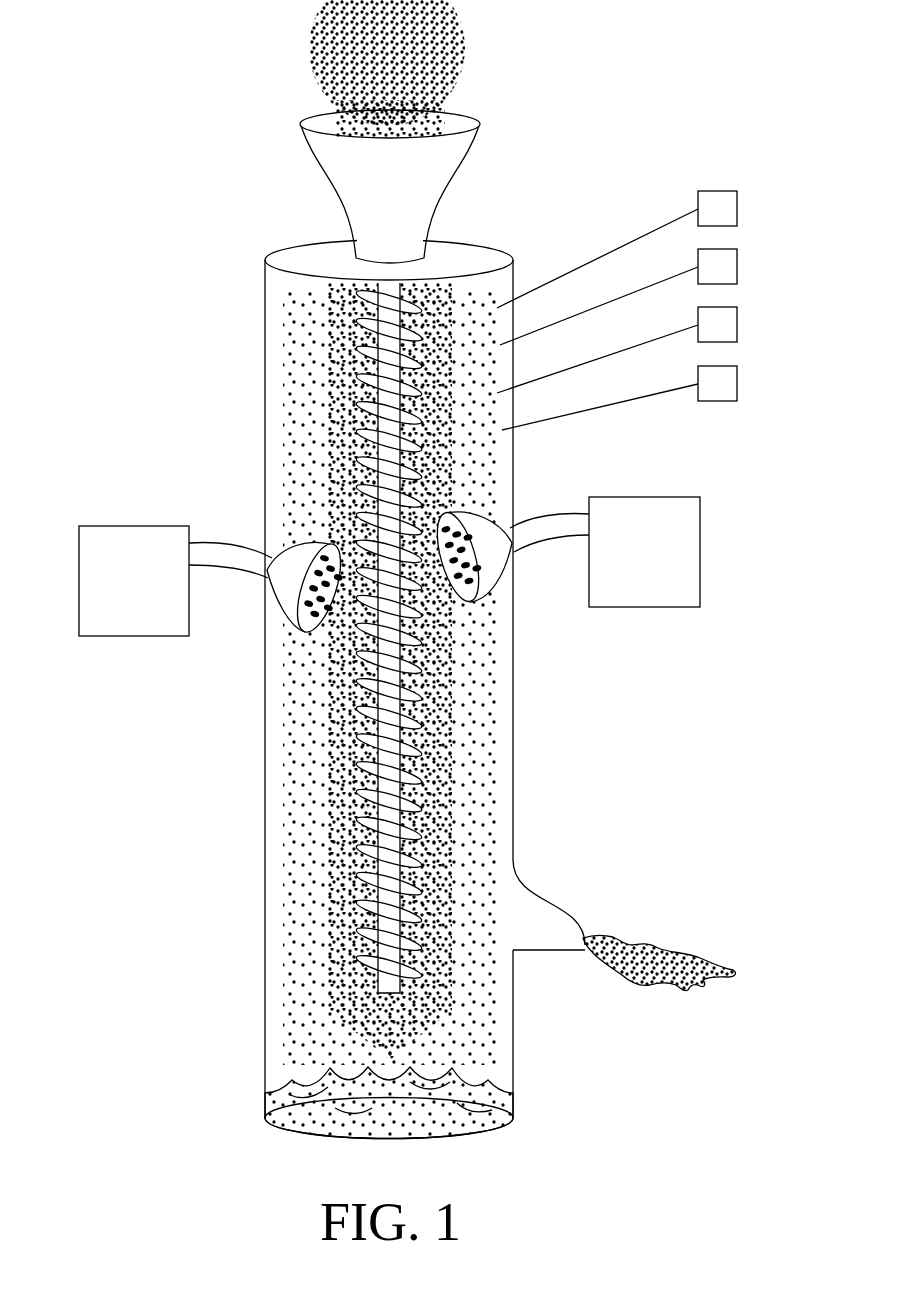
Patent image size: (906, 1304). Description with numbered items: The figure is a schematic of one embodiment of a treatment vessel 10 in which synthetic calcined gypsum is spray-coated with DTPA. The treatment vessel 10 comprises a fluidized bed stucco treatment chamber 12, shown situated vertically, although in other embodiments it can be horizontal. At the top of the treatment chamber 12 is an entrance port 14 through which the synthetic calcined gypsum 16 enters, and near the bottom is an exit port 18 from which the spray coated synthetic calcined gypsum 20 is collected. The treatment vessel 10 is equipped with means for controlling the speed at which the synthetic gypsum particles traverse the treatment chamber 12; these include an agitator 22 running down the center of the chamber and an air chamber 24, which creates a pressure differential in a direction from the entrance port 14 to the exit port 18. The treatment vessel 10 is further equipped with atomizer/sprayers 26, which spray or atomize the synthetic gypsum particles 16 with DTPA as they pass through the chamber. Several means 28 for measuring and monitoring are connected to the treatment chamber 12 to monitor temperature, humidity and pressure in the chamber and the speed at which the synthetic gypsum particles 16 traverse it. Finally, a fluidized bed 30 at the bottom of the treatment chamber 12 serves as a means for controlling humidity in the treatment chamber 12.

The treatment vessel 10 is at (181, 444).
The fluidized bed stucco treatment chamber 12 is at (483, 767).
The entrance port 14 is at (360, 176).
The synthetic calcined gypsum 16 is at (427, 50).
The exit port 18 is at (547, 928).
The spray coated synthetic calcined gypsum 20 is at (690, 957).
The agitator 22 is at (378, 346).
The air chamber 24 is at (293, 738).
The atomizer/sprayer 26 is at (389, 567).
The means for measuring and monitoring 28 is at (773, 185).
The fluidized bed 30 is at (502, 1100).